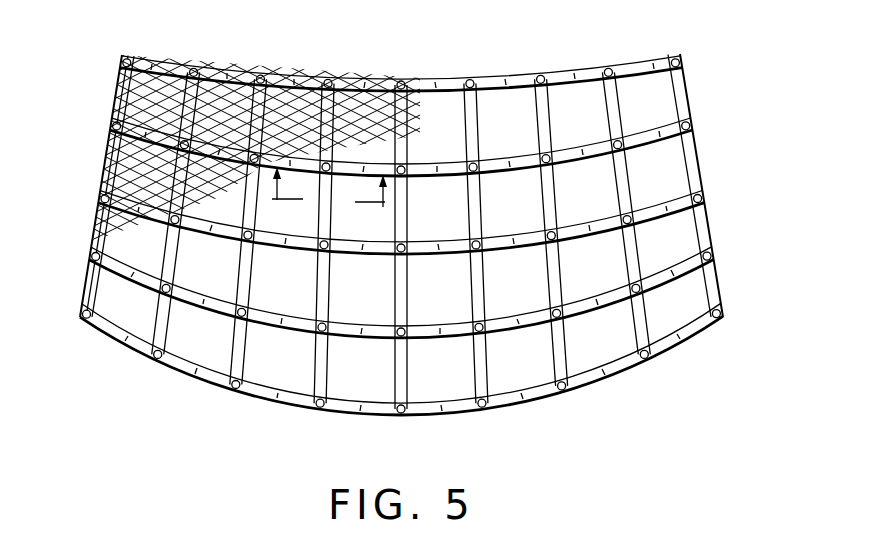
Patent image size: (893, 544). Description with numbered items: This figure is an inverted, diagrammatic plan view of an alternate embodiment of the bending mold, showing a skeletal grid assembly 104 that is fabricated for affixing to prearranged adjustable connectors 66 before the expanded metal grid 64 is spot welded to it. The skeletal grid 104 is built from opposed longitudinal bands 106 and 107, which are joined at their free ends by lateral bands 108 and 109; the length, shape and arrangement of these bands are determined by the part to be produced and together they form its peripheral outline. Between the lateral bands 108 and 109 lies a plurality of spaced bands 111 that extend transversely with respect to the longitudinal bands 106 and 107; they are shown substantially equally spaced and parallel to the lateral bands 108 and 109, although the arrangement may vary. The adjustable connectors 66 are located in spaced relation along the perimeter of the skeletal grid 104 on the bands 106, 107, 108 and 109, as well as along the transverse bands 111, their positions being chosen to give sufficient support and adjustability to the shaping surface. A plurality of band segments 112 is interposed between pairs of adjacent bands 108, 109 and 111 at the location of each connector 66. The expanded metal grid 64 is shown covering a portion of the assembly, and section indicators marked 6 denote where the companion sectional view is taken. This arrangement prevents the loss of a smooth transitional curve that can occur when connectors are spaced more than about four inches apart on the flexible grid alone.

The skeletal grid assembly 104 is at (160, 399).
The longitudinal band 106 is at (495, 76).
The longitudinal band 107 is at (536, 403).
The lateral band 108 is at (90, 282).
The lateral band 109 is at (718, 273).
The transverse band 111 is at (620, 190).
The band segment 112 is at (524, 312).
The adjustable connector 66 is at (466, 80).
The expanded metal grid 64 is at (222, 96).
The section line 6- 6 is at (329, 201).